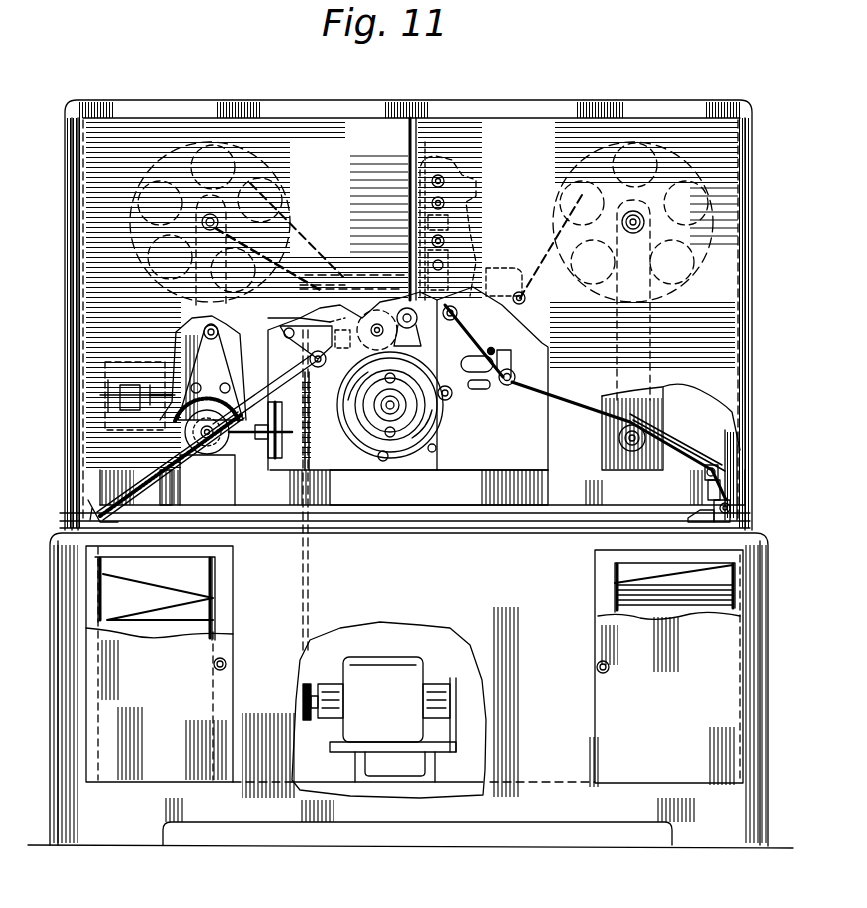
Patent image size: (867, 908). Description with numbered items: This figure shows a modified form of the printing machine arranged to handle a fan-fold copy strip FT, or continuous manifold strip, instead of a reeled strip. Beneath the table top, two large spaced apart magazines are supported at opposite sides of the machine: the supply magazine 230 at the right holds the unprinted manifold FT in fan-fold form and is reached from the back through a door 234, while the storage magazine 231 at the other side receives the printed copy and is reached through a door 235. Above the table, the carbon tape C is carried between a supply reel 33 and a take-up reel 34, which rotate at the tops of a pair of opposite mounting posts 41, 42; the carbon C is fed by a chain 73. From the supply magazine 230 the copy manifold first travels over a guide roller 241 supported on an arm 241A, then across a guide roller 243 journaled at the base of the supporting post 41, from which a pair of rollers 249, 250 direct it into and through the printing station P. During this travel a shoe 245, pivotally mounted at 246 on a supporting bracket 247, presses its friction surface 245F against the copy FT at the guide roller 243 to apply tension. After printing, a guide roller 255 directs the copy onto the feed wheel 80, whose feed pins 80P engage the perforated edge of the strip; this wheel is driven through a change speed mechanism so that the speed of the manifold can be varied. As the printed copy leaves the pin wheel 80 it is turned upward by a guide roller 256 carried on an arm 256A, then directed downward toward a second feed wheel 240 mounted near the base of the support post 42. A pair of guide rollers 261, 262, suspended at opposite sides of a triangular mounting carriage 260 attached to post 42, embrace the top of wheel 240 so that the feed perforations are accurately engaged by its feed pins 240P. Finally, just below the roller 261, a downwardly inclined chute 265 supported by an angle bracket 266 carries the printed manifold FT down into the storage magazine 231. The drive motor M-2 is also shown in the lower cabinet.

The take-up reel 34 is at (258, 153).
The supply reel 33 is at (690, 292).
The chain 73 is at (288, 262).
The printing station P is at (488, 215).
The carbon tape C is at (505, 275).
The guide roller 255 is at (447, 402).
The feed wheel 80 is at (432, 440).
The feed pins 80P is at (396, 458).
The roller 250 is at (458, 318).
The roller 249 is at (508, 386).
The mounting carriage 260 is at (168, 325).
The mounting post 42 is at (222, 330).
The guide roller 261 is at (165, 394).
The feed wheel 240 is at (228, 450).
The feed pins 240P is at (212, 458).
The guide roller 262 is at (280, 398).
The guide roller 256 is at (310, 356).
The arm 256A is at (318, 322).
The chute 265 is at (120, 495).
The angle bracket 266 is at (166, 472).
The fan-fold copy strip FT is at (546, 398).
The mounting post 41 is at (602, 396).
The shoe 245 is at (675, 430).
The friction surface 245F is at (628, 422).
The guide roller 243 is at (619, 440).
The pivot 246 is at (713, 465).
The supporting bracket 247 is at (720, 490).
The guide roller 241 is at (735, 510).
The arm 241A is at (698, 512).
The door 235 is at (182, 703).
The storage magazine 231 is at (222, 610).
The door 234 is at (608, 703).
The supply magazine 230 is at (605, 612).
The motor M-2 is at (389, 710).